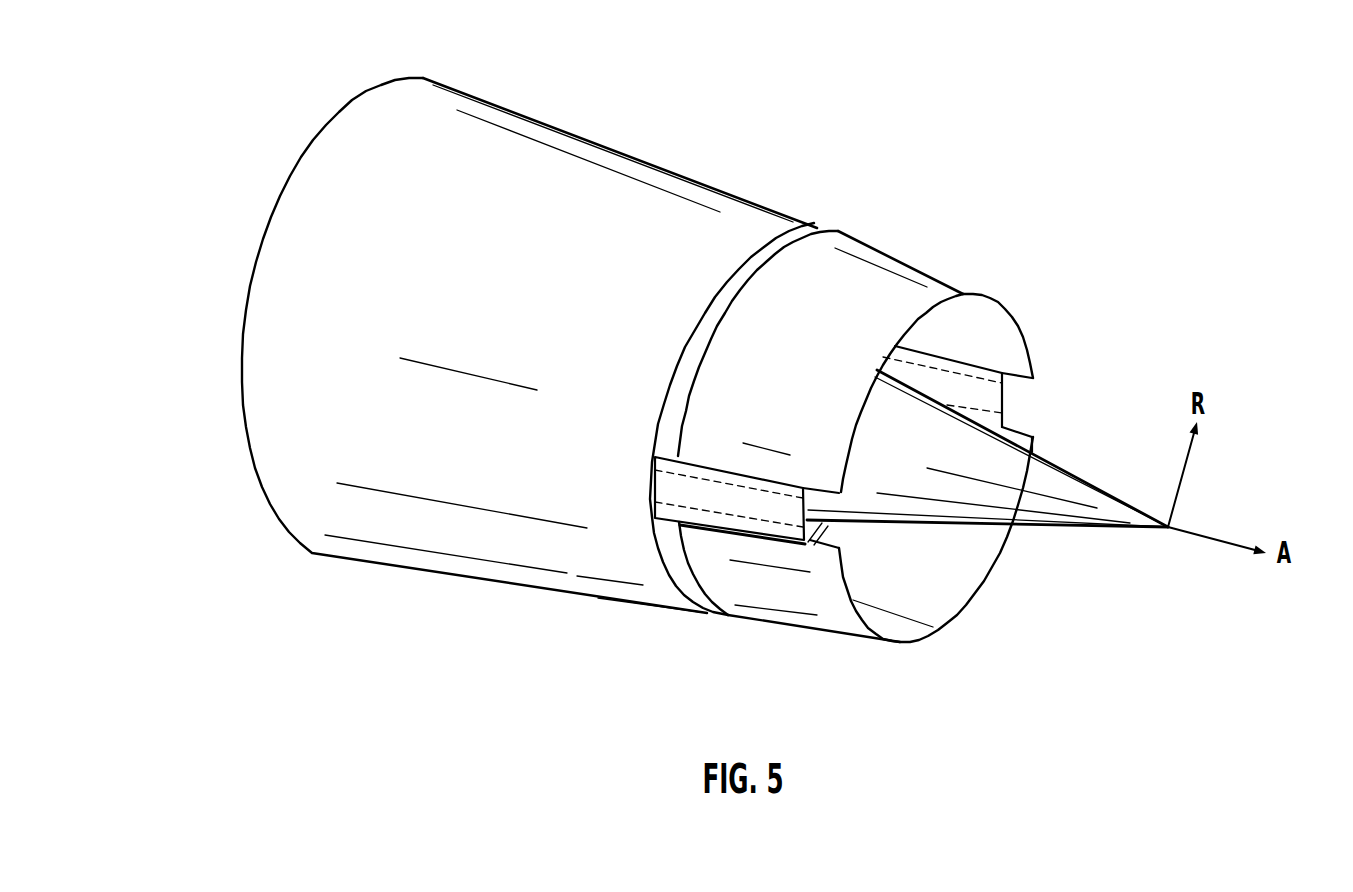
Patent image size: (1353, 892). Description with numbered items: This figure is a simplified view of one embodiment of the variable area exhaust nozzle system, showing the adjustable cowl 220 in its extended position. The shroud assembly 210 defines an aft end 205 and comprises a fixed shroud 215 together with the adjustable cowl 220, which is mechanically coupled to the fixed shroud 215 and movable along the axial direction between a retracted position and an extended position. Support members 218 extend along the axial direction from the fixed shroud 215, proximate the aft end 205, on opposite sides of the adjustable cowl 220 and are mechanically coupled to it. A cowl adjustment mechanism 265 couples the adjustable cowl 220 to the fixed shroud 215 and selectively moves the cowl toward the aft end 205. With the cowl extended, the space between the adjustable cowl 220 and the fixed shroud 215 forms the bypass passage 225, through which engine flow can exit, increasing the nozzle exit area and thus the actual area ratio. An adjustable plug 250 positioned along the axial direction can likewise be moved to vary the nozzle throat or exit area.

The shroud assembly 210 is at (172, 418).
The fixed shroud 215 is at (462, 313).
The bypass passage 225 is at (810, 223).
The support members 218 is at (645, 500).
The adjustable cowl 220 is at (822, 343).
The aft end 205 is at (1034, 352).
The adjustable plug 250 is at (862, 468).
The cowl adjustment mechanism 265 is at (742, 518).